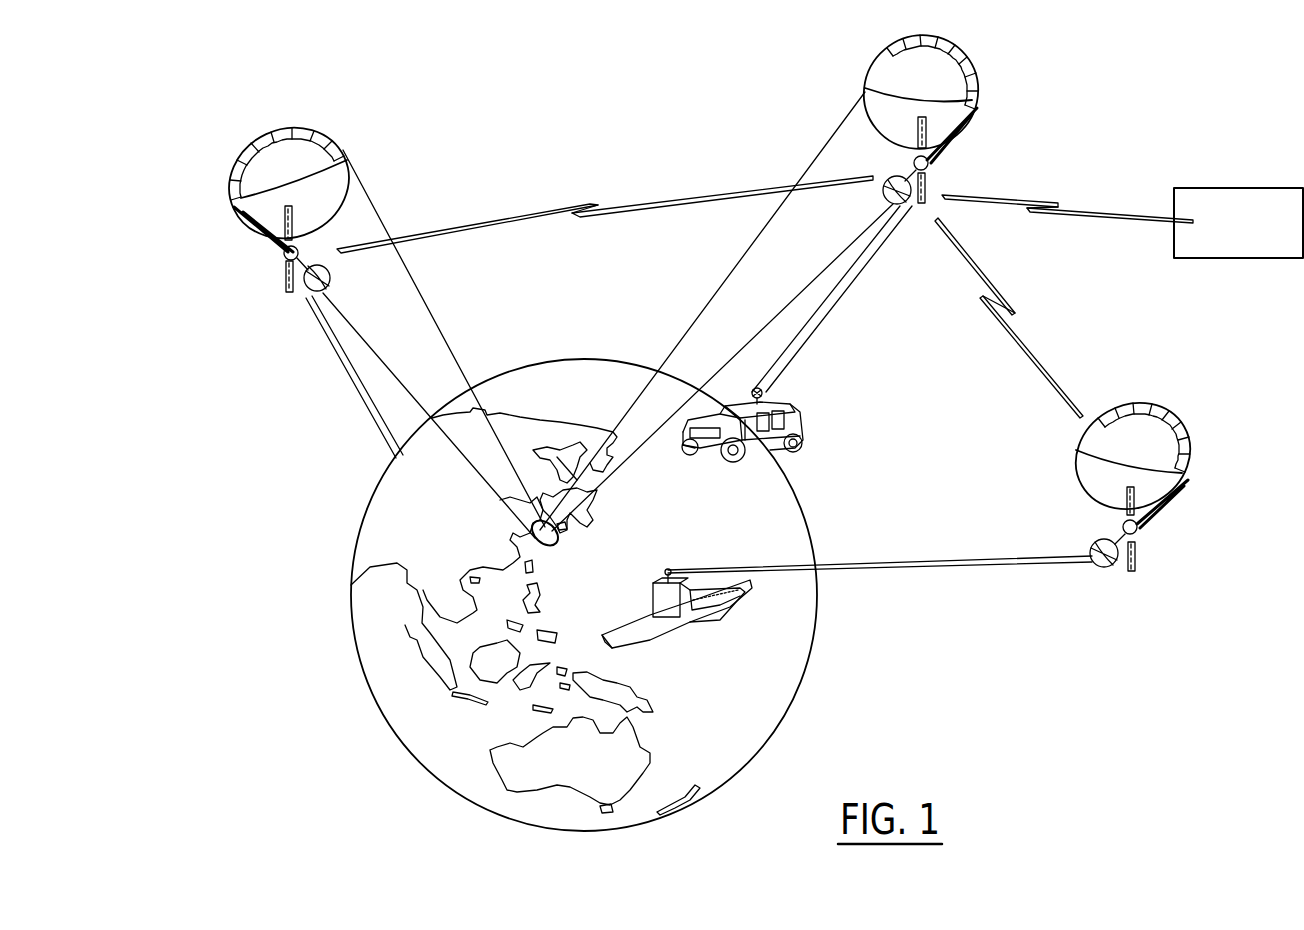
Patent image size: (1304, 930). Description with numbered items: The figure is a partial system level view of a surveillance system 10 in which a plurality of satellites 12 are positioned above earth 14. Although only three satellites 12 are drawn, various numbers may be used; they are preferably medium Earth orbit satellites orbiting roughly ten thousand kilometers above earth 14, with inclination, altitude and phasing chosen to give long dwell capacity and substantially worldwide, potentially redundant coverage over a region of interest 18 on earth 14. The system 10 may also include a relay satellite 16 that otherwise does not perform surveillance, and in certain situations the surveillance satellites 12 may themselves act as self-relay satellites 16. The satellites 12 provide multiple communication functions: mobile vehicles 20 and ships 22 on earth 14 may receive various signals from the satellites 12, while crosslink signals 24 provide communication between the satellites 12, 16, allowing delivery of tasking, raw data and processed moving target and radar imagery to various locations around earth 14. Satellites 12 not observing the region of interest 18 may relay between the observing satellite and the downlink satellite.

The surveillance system 10 is at (253, 77).
The satellites 12 is at (335, 132).
The earth 14 is at (818, 657).
The relay satellite 16 is at (1236, 188).
The region of interest 18 is at (553, 547).
The mobile vehicles 20 is at (805, 421).
The ships 22 is at (712, 612).
The crosslink signals 24 is at (653, 203).